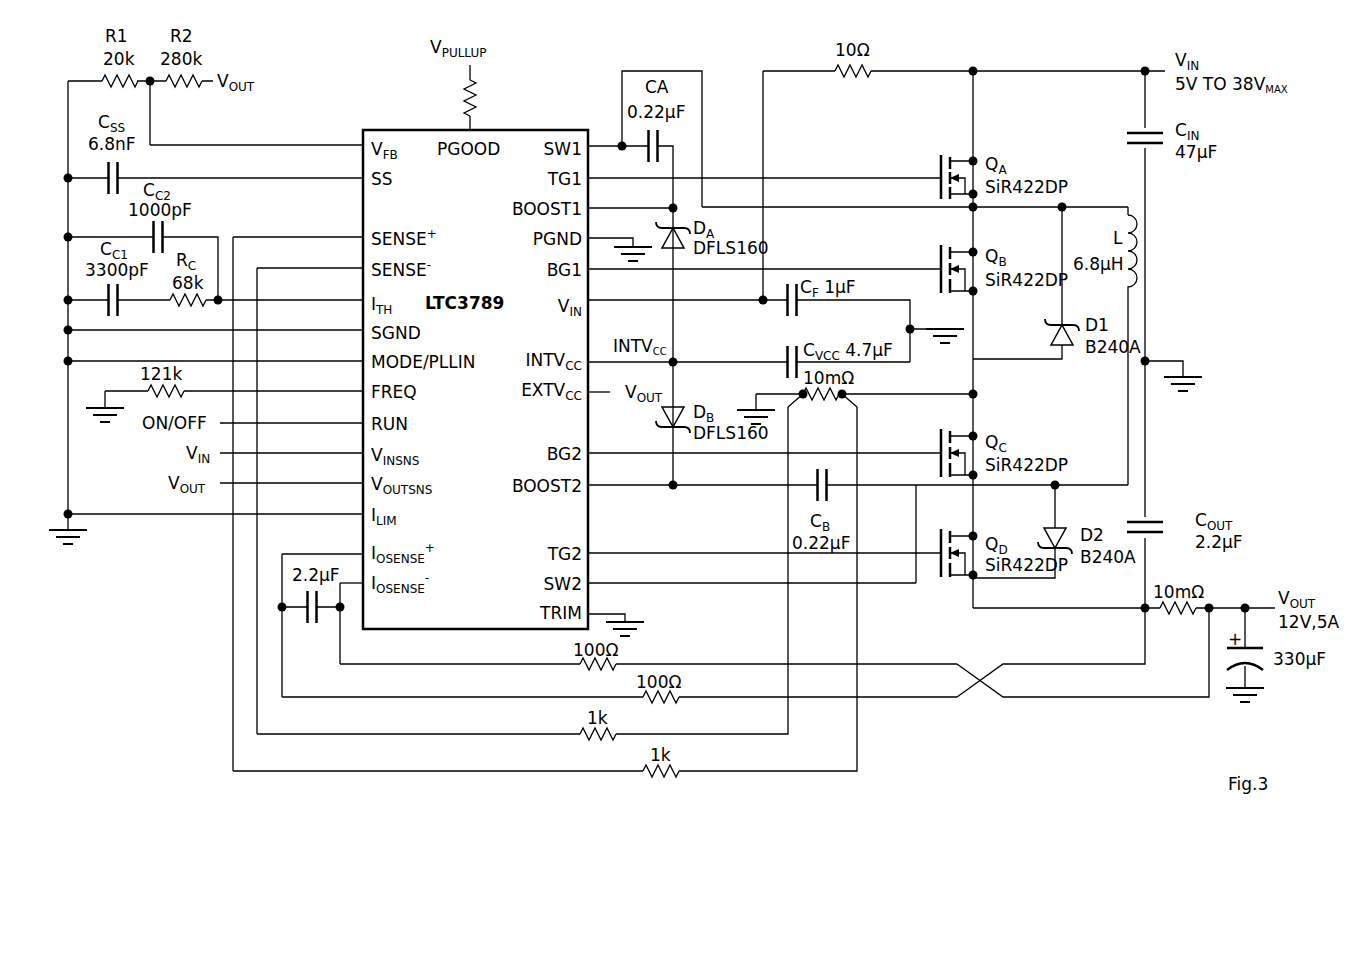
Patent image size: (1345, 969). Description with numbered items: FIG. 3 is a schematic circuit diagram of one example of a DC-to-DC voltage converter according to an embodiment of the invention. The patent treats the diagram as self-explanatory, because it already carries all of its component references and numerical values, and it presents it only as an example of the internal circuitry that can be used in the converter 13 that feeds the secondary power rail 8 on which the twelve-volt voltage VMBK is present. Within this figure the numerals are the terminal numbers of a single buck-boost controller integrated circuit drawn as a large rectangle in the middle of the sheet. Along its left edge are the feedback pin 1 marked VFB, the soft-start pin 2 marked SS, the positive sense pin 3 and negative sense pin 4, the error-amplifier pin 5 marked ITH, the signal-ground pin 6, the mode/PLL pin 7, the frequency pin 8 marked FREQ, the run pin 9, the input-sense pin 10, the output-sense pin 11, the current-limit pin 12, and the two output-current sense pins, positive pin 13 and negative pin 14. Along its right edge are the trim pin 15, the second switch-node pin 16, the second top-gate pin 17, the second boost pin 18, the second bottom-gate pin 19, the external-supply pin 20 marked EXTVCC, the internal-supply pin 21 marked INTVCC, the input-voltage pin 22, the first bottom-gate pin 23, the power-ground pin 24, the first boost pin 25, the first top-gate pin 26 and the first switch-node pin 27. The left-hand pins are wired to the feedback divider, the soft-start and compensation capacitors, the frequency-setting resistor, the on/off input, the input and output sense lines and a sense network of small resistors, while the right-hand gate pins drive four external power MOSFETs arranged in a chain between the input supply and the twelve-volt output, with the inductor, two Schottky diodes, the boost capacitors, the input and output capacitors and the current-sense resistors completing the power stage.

The VFB pin 1 is at (256, 135).
The SS pin 2 is at (240, 167).
The SENSE+ pin 3 is at (298, 226).
The SENSE- pin 4 is at (310, 257).
The ITH pin 5 is at (290, 289).
The SGND pin 6 is at (215, 319).
The MODE/PLLIN pin 7 is at (215, 350).
The secondary power rail 8 is at (273, 380).
The RUN pin 9 is at (291, 412).
The VINSNS pin 10 is at (291, 442).
The VOUTSNS pin 11 is at (291, 472).
The ILIM pin 12 is at (215, 503).
The converter 13 is at (322, 543).
The IOSENSE- pin 14 is at (350, 572).
The TRIM pin 15 is at (616, 613).
The SW2 pin 16 is at (752, 572).
The TG2 pin 17 is at (764, 542).
The BOOST2 pin 18 is at (630, 473).
The BG2 pin 19 is at (764, 442).
The EXTVCC pin 20 is at (601, 381).
The INTVCC pin 21 is at (630, 351).
The VIN pin 22 is at (675, 289).
The BG1 pin 23 is at (764, 258).
The PGND pin 24 is at (620, 238).
The BOOST1 pin 25 is at (630, 197).
The TG1 pin 26 is at (764, 167).
The SW1 pin 27 is at (605, 135).